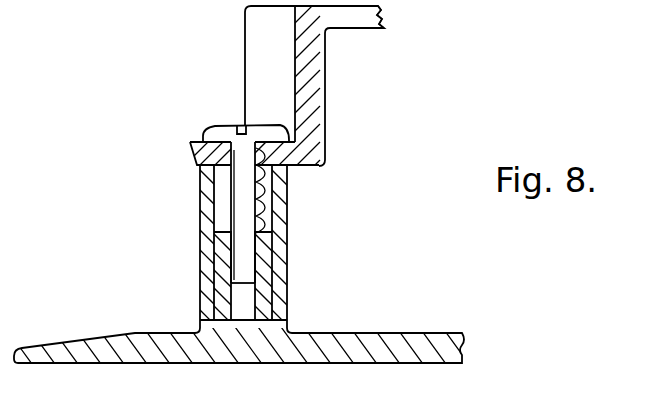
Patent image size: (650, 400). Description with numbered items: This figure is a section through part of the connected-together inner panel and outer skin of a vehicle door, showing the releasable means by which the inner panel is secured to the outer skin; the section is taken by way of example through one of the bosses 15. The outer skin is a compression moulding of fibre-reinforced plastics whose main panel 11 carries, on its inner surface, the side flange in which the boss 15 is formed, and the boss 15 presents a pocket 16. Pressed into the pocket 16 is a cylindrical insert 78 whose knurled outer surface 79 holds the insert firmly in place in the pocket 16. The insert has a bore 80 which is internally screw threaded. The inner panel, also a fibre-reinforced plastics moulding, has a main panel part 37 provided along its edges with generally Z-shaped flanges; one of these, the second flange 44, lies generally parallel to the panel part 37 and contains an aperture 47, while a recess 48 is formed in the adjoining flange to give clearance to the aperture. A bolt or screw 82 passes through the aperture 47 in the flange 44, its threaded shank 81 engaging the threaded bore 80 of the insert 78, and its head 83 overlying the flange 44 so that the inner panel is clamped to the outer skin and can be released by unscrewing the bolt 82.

The main panel 11 is at (372, 340).
The boss 15 is at (284, 243).
The pocket 16 is at (266, 212).
The main panel part 37 is at (374, 28).
The second flange 44 is at (207, 150).
The aperture 47 is at (287, 187).
The recess 48 is at (291, 41).
The insert 78 is at (262, 289).
The knurled outer surface 79 is at (274, 271).
The bore 80 is at (232, 266).
The threaded shank 81 is at (218, 206).
The bolt 82 is at (219, 127).
The head 83 is at (270, 126).